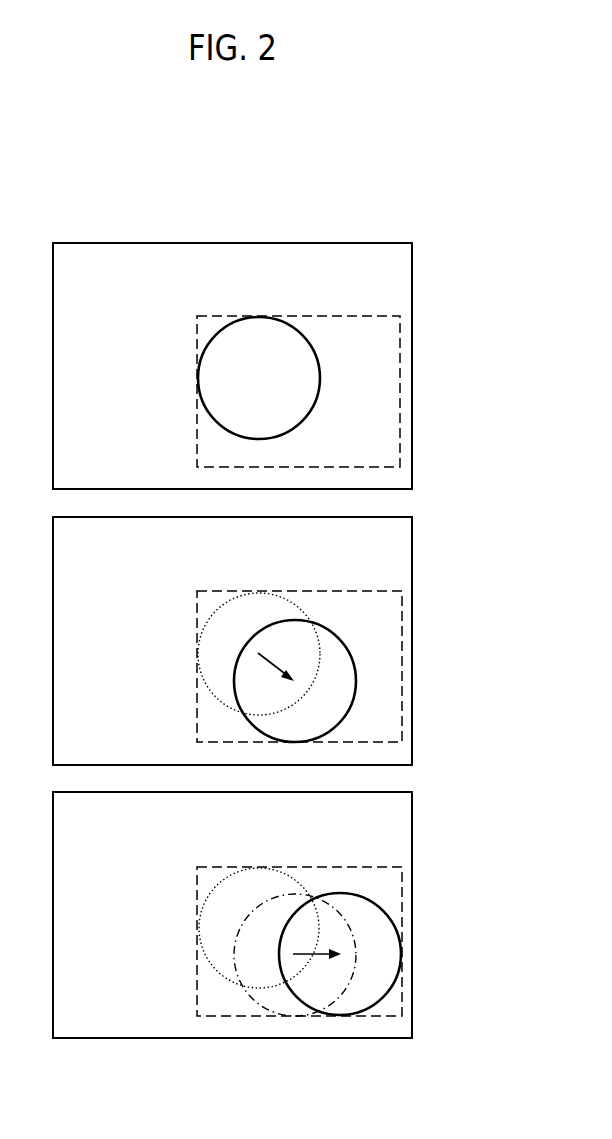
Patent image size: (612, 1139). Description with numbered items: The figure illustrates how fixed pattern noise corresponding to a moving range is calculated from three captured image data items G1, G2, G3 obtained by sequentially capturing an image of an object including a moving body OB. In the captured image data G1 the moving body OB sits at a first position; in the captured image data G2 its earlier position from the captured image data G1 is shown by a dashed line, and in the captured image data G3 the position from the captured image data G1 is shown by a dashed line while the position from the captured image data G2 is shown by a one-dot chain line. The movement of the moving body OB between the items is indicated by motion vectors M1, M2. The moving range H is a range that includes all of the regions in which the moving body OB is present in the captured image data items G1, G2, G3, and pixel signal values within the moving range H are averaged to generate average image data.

The captured image data G1 is at (412, 259).
The captured image data G2 is at (412, 535).
The captured image data G3 is at (412, 812).
The moving range H is at (401, 328).
The moving body OB is at (315, 353).
The motion vector M1 is at (270, 666).
The motion vector M2 is at (317, 957).